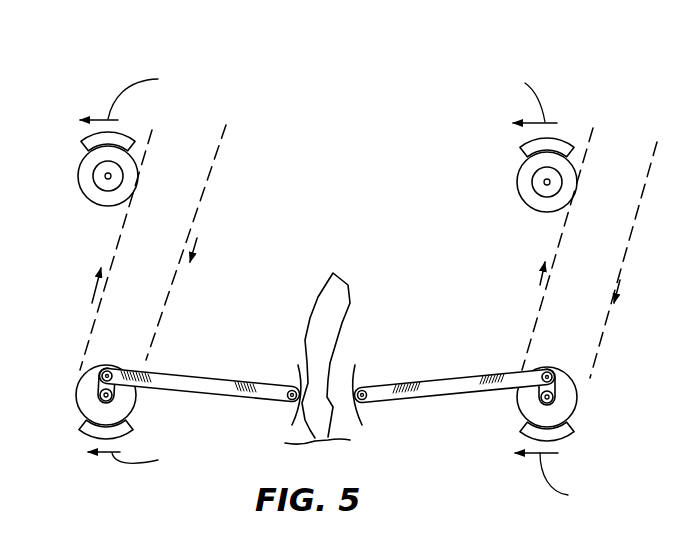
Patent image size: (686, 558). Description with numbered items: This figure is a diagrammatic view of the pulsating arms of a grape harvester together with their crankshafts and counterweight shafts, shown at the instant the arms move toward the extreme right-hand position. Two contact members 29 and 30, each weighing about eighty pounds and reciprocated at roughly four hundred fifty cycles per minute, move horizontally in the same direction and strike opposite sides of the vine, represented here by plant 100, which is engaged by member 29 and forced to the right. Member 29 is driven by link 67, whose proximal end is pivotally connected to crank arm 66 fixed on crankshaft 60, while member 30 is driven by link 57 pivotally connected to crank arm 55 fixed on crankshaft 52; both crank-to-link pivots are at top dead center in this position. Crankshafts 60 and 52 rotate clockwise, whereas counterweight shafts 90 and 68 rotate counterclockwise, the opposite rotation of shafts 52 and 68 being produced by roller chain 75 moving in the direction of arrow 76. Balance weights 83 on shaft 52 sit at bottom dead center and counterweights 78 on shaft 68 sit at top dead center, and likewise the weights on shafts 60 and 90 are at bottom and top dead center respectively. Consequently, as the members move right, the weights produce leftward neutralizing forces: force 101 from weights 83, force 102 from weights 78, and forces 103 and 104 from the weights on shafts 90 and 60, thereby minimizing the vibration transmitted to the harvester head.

The contact member 29 is at (297, 377).
The contact member 30 is at (358, 373).
The crankshaft 52 is at (563, 410).
The crank arm 55 is at (555, 388).
The link 57 is at (462, 385).
The crankshaft 60 is at (90, 403).
The crank arm 66 is at (98, 385).
The link 67 is at (202, 382).
The counterweight shaft 68 is at (537, 182).
The roller chain 75 is at (618, 277).
The direction arrow of roller chain 76 is at (197, 240).
The counterweights 78 is at (560, 148).
The balance weights 83 is at (563, 433).
The counterweight shaft 90 is at (105, 187).
The plant 100 is at (343, 290).
The force 101 is at (563, 481).
The force 102 is at (522, 93).
The force 103 is at (144, 94).
The force 104 is at (144, 454).